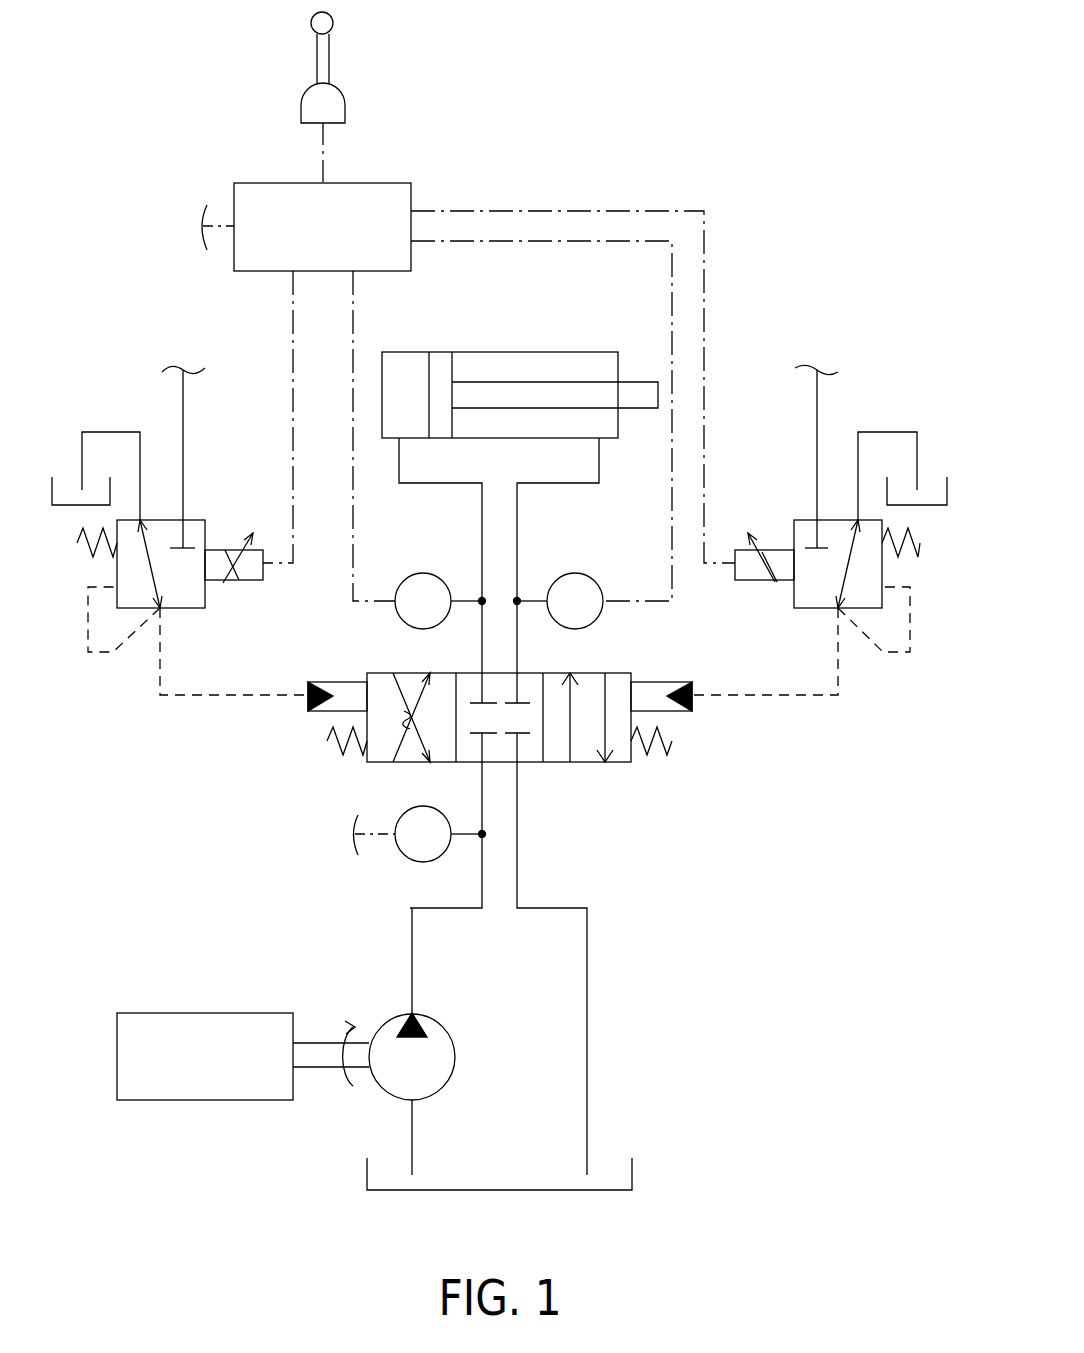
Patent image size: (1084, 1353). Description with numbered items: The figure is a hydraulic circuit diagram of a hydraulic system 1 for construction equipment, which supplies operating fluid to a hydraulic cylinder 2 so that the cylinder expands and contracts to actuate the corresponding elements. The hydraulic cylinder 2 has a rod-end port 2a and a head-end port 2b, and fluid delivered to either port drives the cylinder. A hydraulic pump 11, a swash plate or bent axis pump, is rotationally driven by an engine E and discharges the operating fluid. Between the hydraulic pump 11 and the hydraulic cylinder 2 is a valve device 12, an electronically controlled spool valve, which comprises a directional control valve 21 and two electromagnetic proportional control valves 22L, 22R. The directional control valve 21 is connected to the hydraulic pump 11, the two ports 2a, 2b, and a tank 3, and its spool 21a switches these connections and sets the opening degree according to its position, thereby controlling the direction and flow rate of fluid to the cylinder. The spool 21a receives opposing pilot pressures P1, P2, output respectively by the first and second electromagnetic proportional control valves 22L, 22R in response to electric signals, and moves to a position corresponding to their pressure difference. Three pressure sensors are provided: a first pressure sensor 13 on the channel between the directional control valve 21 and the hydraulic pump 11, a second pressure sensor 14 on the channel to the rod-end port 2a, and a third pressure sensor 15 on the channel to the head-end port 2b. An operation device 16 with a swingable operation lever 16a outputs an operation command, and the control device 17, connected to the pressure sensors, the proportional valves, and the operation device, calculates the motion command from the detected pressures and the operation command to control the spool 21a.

The hydraulic system 1 is at (755, 123).
The hydraulic cylinder 2 is at (517, 357).
The rod-end port 2a is at (599, 438).
The head-end port 2b is at (399, 438).
The tank 3 is at (610, 1168).
The hydraulic pump 11 is at (390, 1025).
The valve device 12 is at (499, 770).
The first pressure sensor 13 is at (417, 857).
The second pressure sensor 14 is at (573, 575).
The third pressure sensor 15 is at (418, 575).
The operation device 16 is at (305, 108).
The operation lever 16a is at (323, 56).
The control device 17 is at (247, 192).
The directional control valve 21 is at (577, 780).
The spool 21a is at (622, 670).
The first electromagnetic proportional control valve 22L is at (192, 525).
The second electromagnetic proportional control valve 22R is at (805, 525).
The engine E is at (217, 1018).
The first pilot pressure P1 is at (232, 697).
The second pilot pressure P2 is at (782, 697).